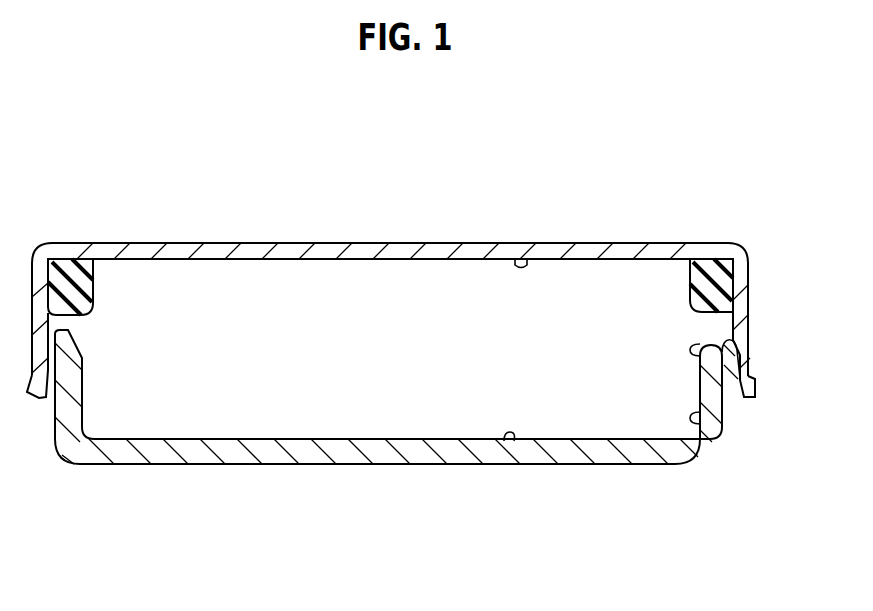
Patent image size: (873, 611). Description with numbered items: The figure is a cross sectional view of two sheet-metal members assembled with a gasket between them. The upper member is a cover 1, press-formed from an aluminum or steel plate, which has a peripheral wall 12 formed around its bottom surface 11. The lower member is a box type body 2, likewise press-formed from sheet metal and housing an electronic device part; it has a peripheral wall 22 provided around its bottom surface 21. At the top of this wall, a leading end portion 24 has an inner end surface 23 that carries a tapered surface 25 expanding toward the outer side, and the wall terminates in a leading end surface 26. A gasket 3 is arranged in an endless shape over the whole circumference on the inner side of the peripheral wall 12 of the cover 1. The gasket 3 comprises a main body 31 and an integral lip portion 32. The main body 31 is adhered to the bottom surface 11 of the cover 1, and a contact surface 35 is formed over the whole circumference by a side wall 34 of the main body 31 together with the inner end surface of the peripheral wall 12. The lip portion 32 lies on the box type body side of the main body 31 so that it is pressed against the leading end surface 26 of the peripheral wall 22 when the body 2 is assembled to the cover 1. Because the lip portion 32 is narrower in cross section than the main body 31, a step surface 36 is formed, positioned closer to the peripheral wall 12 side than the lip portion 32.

The cover 1 is at (378, 243).
The bottom surface 11 is at (521, 259).
The peripheral wall 12 is at (748, 352).
The box type body 2 is at (407, 451).
The bottom surface 21 is at (507, 440).
The peripheral wall 22 is at (724, 388).
The inner end surface 23 is at (716, 427).
The leading end portion 24 is at (700, 350).
The tapered surface 25 is at (700, 417).
The leading end surface 26 is at (738, 333).
The gasket 3 is at (693, 280).
The main body 31 is at (725, 268).
The lip portion 32 is at (733, 322).
The side wall 34 is at (738, 296).
The contact surface 35 is at (742, 268).
The step surface 36 is at (736, 312).